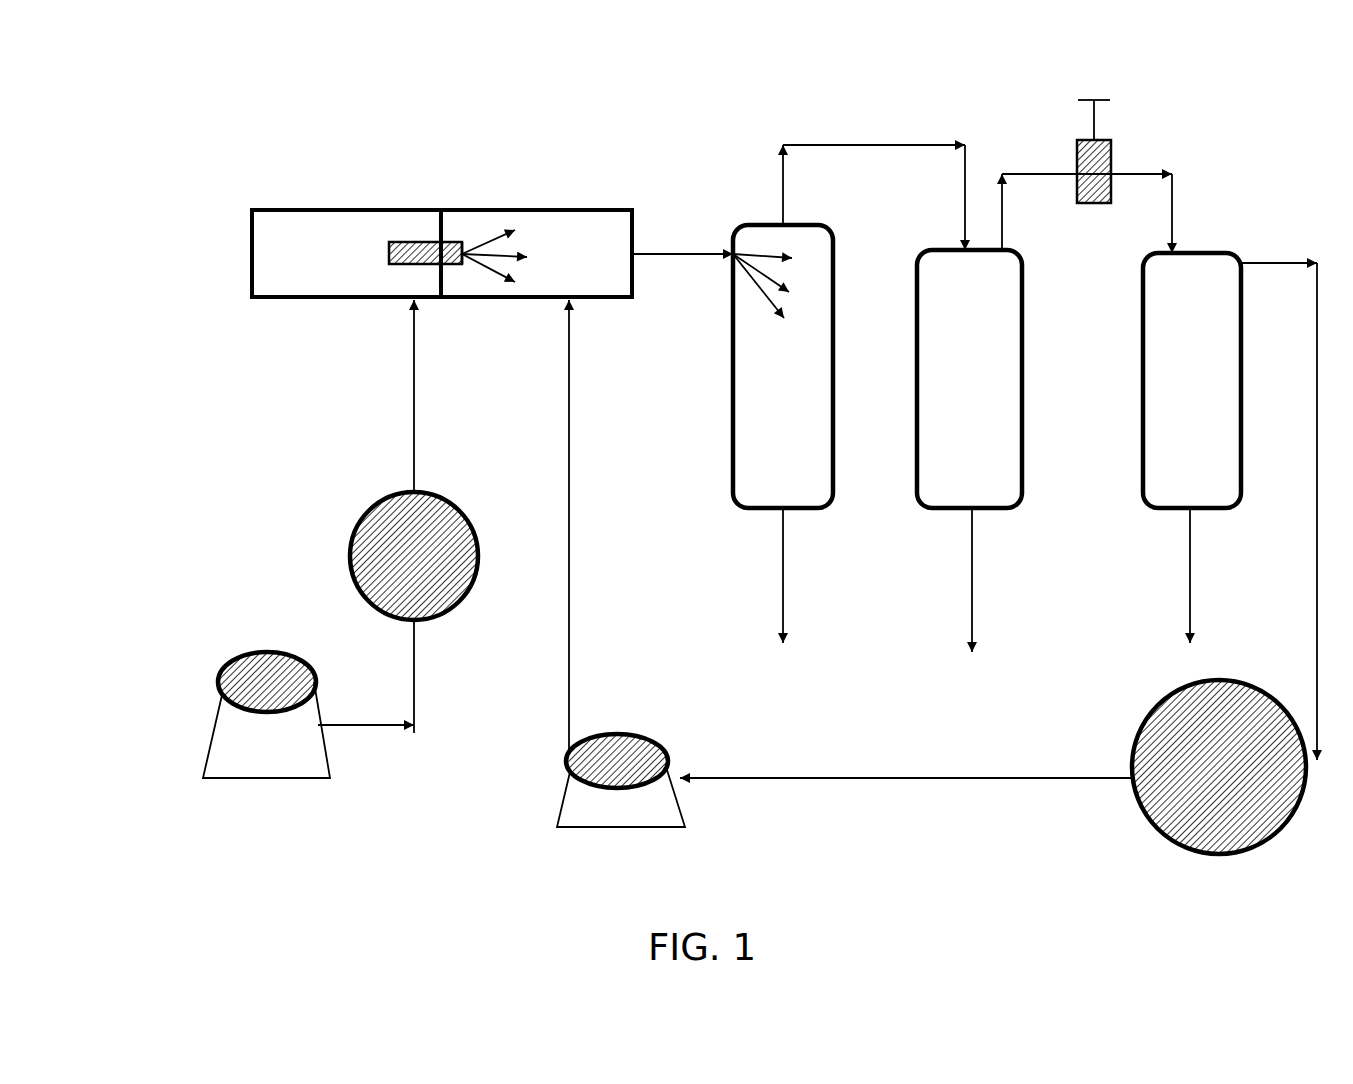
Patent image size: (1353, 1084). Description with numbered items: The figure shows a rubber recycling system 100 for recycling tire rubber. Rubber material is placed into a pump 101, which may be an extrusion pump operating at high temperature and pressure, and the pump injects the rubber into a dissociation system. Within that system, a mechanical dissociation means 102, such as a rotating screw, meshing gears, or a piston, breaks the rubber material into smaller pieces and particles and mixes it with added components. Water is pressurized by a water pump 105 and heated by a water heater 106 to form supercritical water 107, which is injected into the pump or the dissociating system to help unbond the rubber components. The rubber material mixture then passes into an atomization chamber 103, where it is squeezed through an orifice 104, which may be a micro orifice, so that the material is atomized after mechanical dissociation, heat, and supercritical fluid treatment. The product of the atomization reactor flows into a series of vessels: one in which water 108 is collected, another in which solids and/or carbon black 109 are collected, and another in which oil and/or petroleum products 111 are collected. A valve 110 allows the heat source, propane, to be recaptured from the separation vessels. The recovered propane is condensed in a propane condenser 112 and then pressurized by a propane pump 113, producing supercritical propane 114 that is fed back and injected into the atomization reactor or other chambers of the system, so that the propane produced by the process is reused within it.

The rubber recycling system 100 is at (157, 112).
The pump 101 is at (338, 197).
The mechanical dissociation means 102 is at (375, 254).
The atomization chamber 103 is at (485, 200).
The orifice 104 is at (464, 253).
The water pump 105 is at (207, 675).
The water heater 106 is at (340, 553).
The supercritical water 107 is at (390, 447).
The water 108 is at (810, 565).
The solids and/or carbon black 109 is at (988, 560).
The valve 110 is at (1120, 123).
The oil and/or petroleum products 111 is at (1212, 560).
The propane condenser 112 is at (1113, 817).
The propane pump 113 is at (652, 725).
The supercritical propane 114 is at (632, 408).